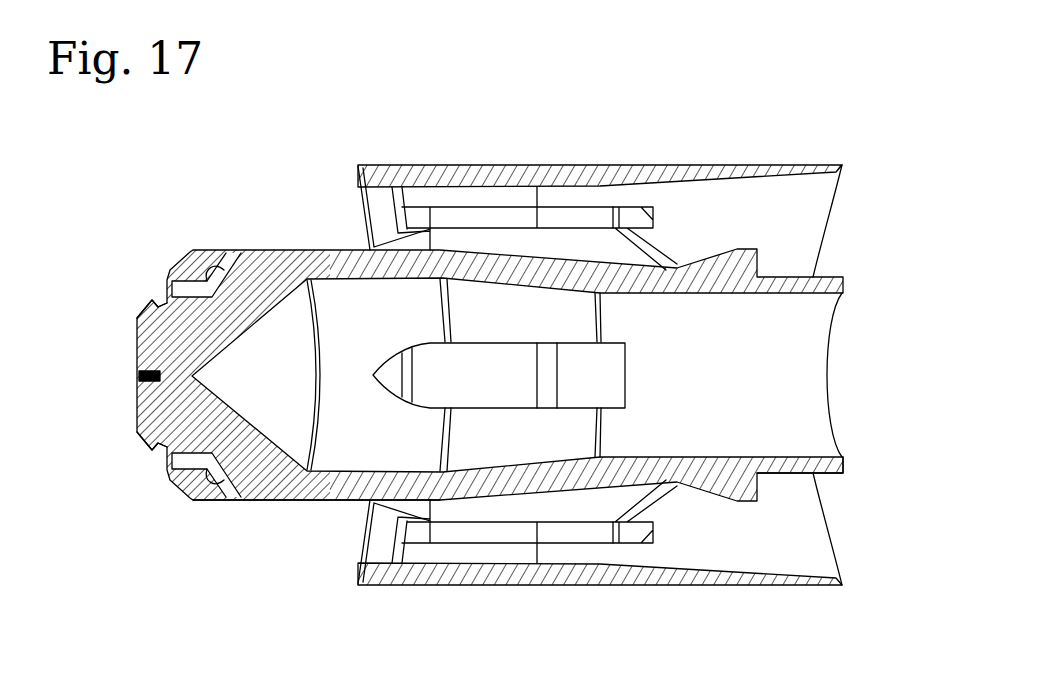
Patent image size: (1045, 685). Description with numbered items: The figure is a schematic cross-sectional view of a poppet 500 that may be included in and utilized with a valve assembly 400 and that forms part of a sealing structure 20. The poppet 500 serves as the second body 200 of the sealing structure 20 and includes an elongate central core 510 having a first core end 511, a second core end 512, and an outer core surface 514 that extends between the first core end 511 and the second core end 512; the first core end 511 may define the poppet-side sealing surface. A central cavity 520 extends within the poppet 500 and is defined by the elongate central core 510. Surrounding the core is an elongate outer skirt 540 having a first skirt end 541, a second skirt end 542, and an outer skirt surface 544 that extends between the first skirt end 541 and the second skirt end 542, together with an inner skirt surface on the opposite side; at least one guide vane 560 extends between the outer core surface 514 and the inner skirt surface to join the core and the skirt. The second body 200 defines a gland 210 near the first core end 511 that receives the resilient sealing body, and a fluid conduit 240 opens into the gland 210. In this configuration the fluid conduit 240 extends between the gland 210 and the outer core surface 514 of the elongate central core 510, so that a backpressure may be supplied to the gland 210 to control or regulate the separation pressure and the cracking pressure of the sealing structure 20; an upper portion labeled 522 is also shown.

The valve assembly 400 is at (150, 118).
The sealing structure 20 is at (180, 158).
The second body 200 is at (413, 163).
The gland 210 is at (148, 290).
The fluid conduit 240 is at (180, 268).
The poppet 500 is at (490, 136).
The elongate central core 510 is at (271, 245).
The first core end 511 is at (137, 390).
The second core end 512 is at (845, 466).
The outer core surface 514 is at (267, 500).
The central cavity 520 is at (800, 405).
The upper arm 522 is at (822, 196).
The elongate outer skirt 540 is at (645, 592).
The first skirt end 541 is at (357, 580).
The second skirt end 542 is at (838, 563).
The outer skirt surface 544 is at (478, 586).
The guide vane 560 is at (677, 252).